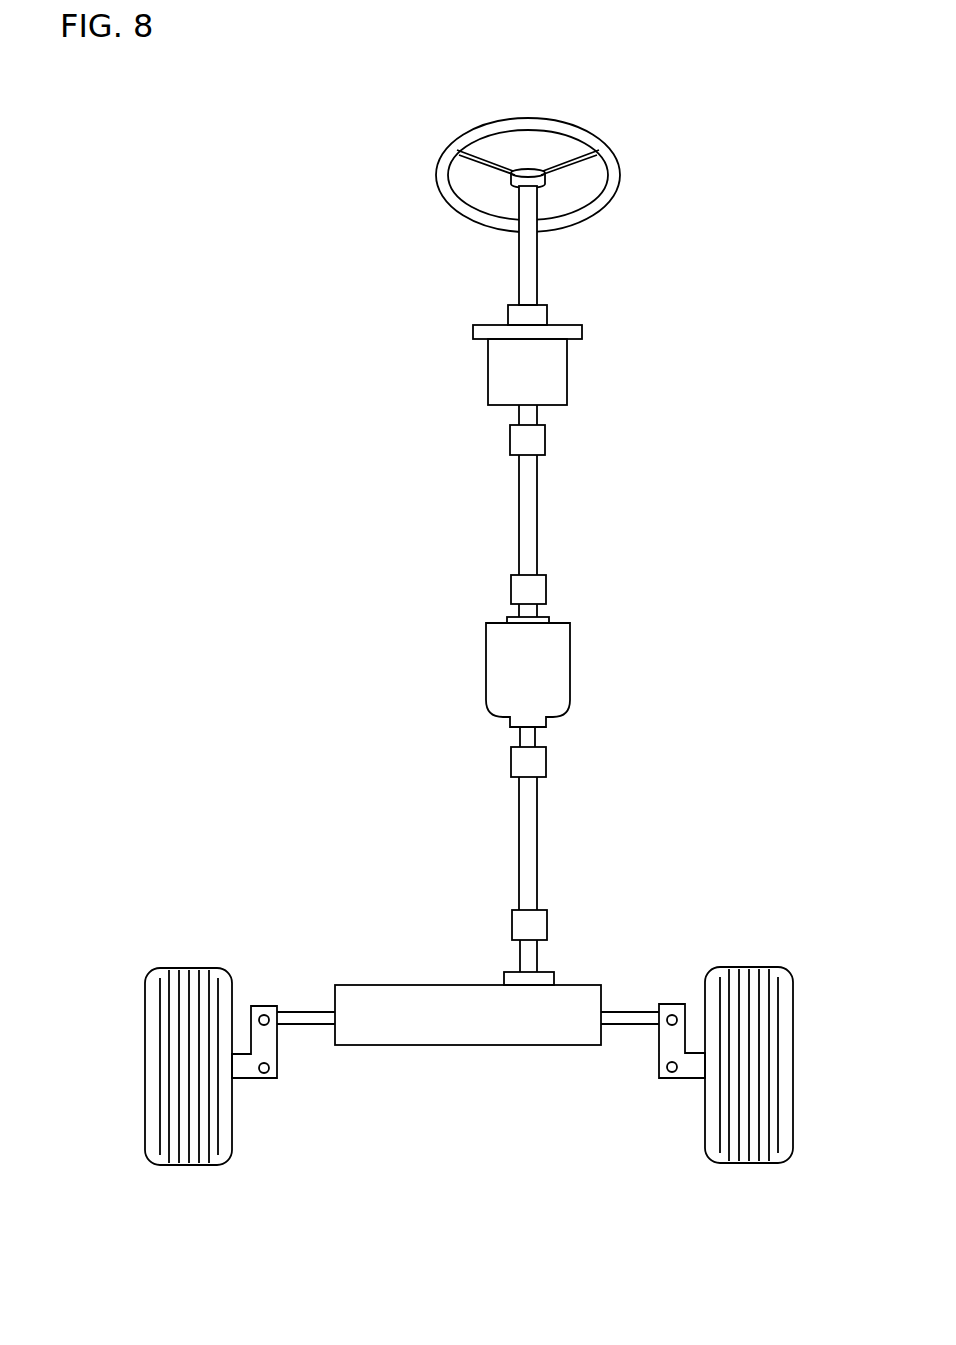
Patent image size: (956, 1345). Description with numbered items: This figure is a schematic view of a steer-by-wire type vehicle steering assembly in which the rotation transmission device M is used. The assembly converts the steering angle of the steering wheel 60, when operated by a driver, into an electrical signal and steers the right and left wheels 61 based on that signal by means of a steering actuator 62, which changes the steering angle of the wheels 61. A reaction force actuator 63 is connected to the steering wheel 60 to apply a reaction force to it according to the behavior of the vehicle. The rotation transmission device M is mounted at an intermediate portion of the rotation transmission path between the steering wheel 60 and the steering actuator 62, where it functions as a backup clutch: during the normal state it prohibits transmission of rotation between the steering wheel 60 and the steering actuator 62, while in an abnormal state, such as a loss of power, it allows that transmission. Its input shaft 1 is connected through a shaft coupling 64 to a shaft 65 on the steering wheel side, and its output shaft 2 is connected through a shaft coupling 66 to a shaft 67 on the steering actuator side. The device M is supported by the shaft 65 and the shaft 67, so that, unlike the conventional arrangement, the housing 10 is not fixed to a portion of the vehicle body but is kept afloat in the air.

The steering wheel 60 is at (438, 180).
The reaction force actuator 63 is at (500, 370).
The shaft 65 is at (525, 513).
The shaft coupling 64 is at (518, 590).
The input shaft 1 is at (537, 610).
The housing 10 is at (563, 667).
The rotation transmission device M is at (483, 657).
The output shaft 2 is at (530, 739).
The shaft coupling 66 is at (522, 764).
The shaft 67 is at (525, 840).
The steering actuator 62 is at (387, 995).
The right and left wheels 61 is at (185, 975).